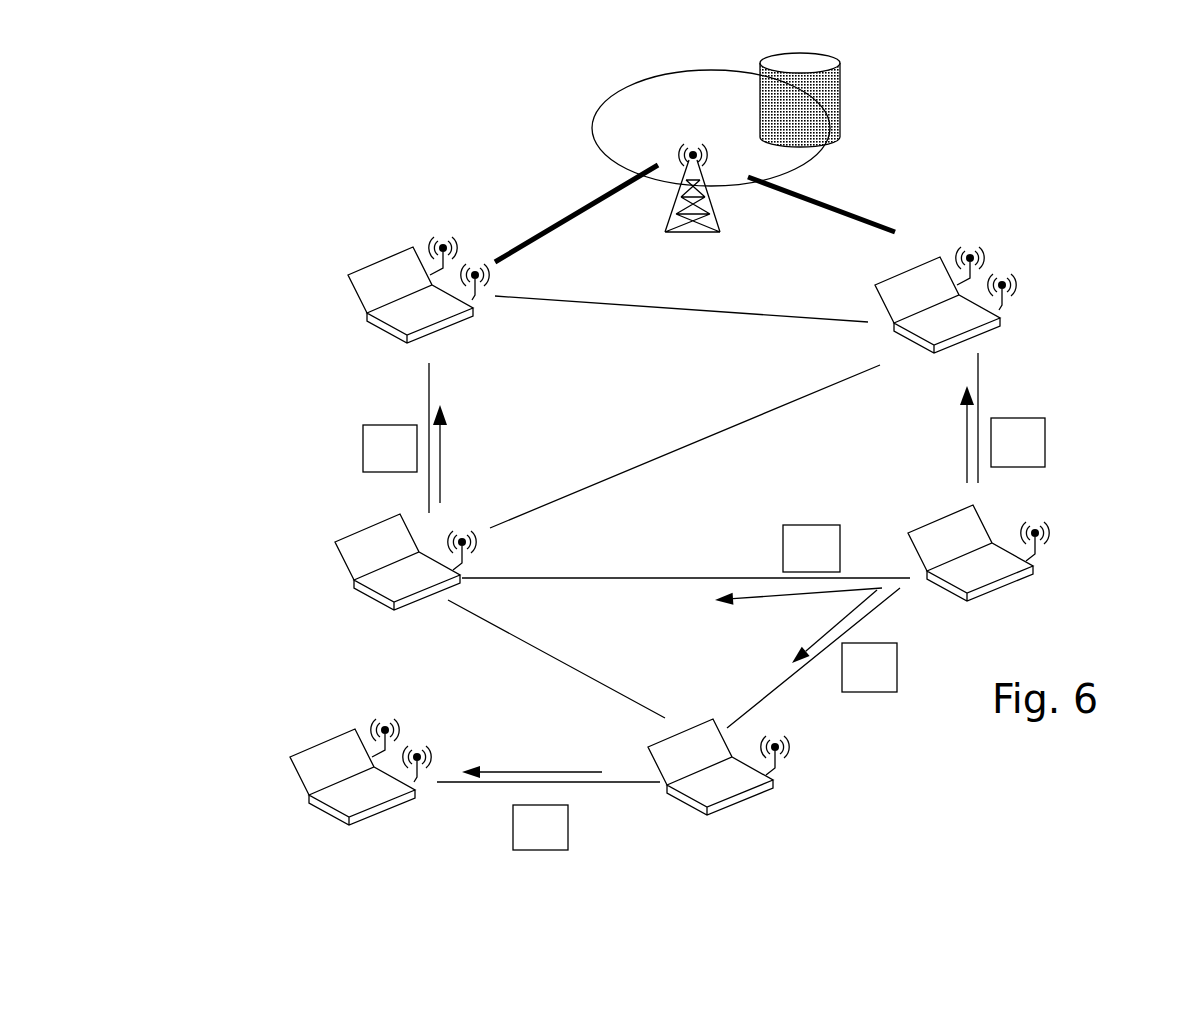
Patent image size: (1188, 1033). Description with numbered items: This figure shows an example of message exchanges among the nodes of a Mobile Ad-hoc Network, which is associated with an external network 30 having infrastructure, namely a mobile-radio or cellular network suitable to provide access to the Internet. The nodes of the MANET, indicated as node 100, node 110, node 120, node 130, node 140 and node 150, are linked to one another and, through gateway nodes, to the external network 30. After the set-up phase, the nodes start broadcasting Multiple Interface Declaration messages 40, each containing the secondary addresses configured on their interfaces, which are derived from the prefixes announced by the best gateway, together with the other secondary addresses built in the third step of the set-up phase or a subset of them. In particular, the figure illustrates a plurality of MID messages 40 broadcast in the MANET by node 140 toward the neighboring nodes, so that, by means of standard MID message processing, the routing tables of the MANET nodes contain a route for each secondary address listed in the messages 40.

The external network 30 is at (903, 127).
The Multiple Interface Declaration message 40 is at (358, 453).
The node 100 is at (302, 797).
The node 110 is at (737, 810).
The node 120 is at (360, 323).
The node 130 is at (1020, 326).
The node 140 is at (1023, 587).
The node 150 is at (337, 582).